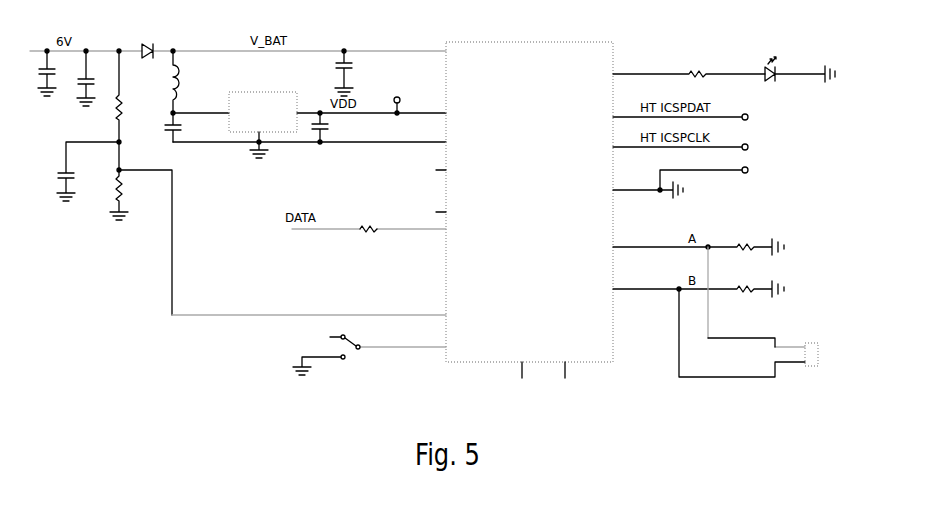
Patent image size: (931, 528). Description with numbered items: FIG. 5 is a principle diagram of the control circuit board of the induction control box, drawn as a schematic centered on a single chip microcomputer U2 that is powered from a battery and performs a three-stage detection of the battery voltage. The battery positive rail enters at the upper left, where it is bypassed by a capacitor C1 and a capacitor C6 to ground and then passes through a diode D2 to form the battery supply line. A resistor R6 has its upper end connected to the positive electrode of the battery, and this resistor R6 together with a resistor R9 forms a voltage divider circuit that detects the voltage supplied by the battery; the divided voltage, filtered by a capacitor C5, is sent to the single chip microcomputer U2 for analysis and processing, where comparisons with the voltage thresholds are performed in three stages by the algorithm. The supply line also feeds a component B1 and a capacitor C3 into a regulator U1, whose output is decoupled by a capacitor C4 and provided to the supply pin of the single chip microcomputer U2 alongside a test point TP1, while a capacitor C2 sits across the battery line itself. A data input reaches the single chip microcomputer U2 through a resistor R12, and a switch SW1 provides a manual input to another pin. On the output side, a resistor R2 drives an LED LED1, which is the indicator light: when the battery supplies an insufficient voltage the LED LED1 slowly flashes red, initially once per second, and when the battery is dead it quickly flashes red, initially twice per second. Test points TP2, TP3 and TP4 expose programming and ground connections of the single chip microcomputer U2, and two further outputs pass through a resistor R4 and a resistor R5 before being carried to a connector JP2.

The capacitor C1 is at (56, 73).
The capacitor C6 is at (93, 78).
The diode D2 is at (135, 45).
The resistor R6 is at (129, 96).
The resistor R9 is at (126, 195).
The capacitor C5 is at (88, 171).
The inductor/bead B1 is at (185, 82).
The capacitor C3 is at (162, 127).
The voltage regulator U1 is at (263, 117).
The capacitor C4 is at (328, 127).
The test point TP1 is at (395, 97).
The capacitor C2 is at (351, 73).
The resistor R12 is at (369, 221).
The switch SW1 is at (369, 346).
The single chip microcomputer U2 is at (527, 210).
The resistor R2 is at (689, 66).
The LED LED1 is at (795, 60).
The test point TP2 is at (693, 119).
The test point TP3 is at (693, 149).
The test point TP4 is at (717, 177).
The resistor R4 is at (698, 242).
The resistor R5 is at (698, 295).
The jumper connector JP2 is at (761, 312).